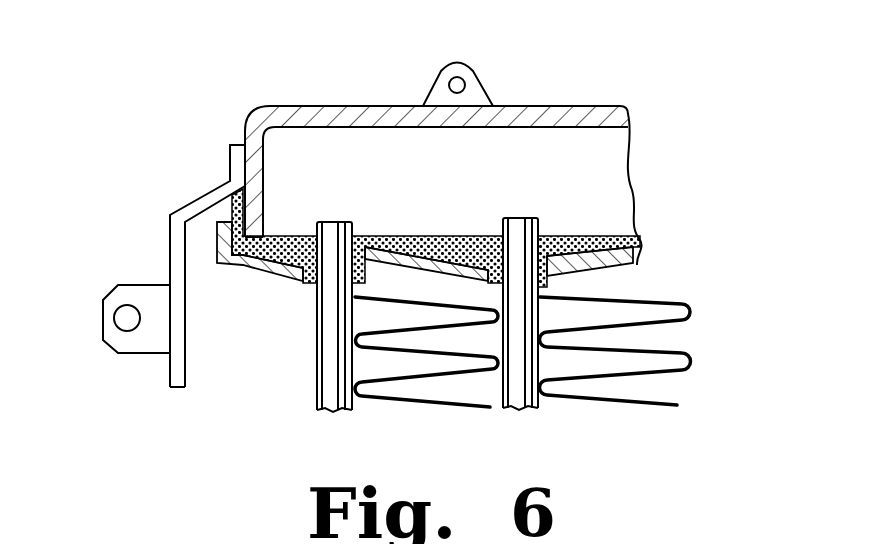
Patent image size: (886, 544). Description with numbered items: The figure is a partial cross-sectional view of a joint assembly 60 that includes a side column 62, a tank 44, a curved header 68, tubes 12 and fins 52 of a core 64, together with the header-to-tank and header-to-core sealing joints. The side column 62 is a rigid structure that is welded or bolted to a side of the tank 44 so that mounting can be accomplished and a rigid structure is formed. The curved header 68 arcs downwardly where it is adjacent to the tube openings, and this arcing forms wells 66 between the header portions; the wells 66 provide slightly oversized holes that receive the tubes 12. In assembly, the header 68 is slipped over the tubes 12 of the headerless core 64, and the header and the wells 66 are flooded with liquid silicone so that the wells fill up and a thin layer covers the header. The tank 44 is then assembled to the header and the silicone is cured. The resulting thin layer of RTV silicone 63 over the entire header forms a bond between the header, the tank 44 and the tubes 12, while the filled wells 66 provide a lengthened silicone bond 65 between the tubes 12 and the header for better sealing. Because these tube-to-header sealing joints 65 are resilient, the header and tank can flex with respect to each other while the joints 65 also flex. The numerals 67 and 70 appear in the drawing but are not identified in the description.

The tubes 12 is at (332, 370).
The tank 44 is at (322, 107).
The fins 52 is at (693, 303).
The joint assembly 60 is at (618, 80).
The side column 62 is at (170, 239).
The RTV silicone 63 is at (242, 222).
The core 64 is at (535, 427).
The silicone bond 65 is at (309, 289).
The wells 66 is at (366, 252).
The seal fillet 67 is at (312, 258).
The curved header 68 is at (617, 266).
The housing 70 is at (745, 543).